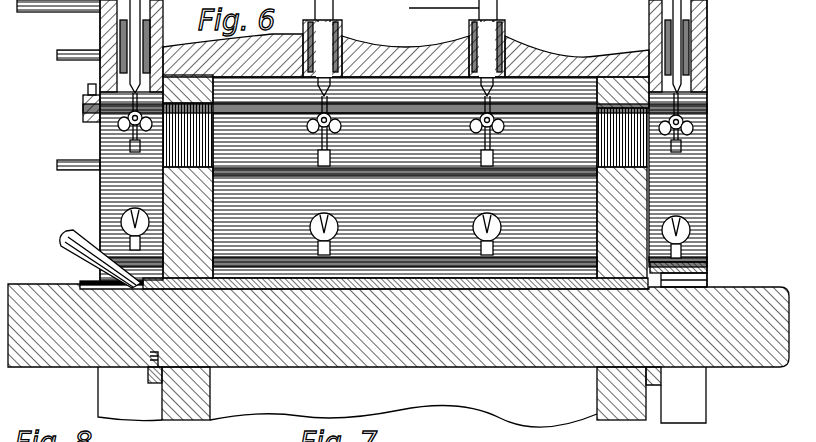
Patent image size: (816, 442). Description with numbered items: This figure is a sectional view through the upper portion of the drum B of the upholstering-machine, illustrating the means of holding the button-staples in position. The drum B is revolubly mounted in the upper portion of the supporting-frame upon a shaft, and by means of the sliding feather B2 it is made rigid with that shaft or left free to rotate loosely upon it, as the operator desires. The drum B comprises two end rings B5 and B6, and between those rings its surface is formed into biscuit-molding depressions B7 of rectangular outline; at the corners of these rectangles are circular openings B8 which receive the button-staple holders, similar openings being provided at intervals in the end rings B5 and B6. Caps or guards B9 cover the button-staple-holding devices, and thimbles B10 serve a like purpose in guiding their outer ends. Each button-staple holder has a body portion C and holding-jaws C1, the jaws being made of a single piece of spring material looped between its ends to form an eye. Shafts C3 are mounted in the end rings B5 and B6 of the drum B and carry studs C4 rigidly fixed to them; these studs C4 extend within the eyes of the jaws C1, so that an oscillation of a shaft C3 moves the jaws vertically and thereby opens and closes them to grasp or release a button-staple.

The drum B is at (170, 213).
The sliding feather B2 is at (322, 300).
The end ring B5 is at (707, 217).
The end ring B6 is at (120, 201).
The biscuit-molding depressions B7 is at (253, 47).
The circular openings B8 is at (691, 133).
The caps or guards B9 is at (334, 5).
The thimbles B10 is at (98, 8).
The body portion of button-staple holder C is at (395, 95).
The holding-jaws C1 is at (342, 28).
The shafts C3 is at (395, 253).
The studs C4 is at (331, 247).